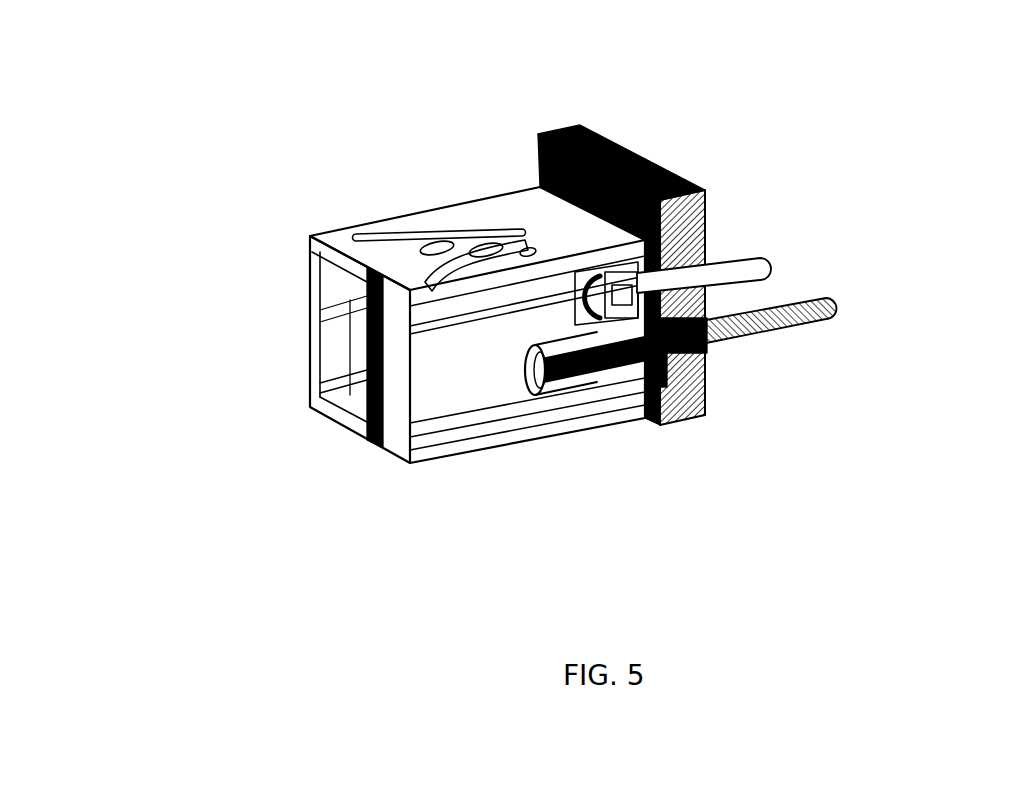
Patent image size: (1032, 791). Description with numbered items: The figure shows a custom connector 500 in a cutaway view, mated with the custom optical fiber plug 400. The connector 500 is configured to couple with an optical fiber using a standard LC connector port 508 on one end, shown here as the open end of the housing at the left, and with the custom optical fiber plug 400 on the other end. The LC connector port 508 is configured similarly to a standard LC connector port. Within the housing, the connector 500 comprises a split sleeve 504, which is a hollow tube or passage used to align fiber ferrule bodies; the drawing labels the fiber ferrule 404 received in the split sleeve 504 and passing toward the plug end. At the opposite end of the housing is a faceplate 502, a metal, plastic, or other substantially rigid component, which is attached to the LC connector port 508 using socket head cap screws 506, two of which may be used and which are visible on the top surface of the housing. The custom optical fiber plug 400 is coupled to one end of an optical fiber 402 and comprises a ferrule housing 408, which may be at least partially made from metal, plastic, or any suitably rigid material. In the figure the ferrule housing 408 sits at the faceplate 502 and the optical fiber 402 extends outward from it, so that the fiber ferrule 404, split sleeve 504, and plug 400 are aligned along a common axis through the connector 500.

The custom connector 500 is at (343, 78).
The faceplate 502 is at (832, 118).
The split sleeve 504 is at (552, 395).
The socket head cap screw 506 is at (537, 240).
The LC connector port 508 is at (333, 230).
The custom optical fiber plug 400 is at (822, 288).
The optical fiber 402 is at (942, 395).
The fiber ferrule 404 is at (618, 352).
The ferrule housing 408 is at (988, 508).